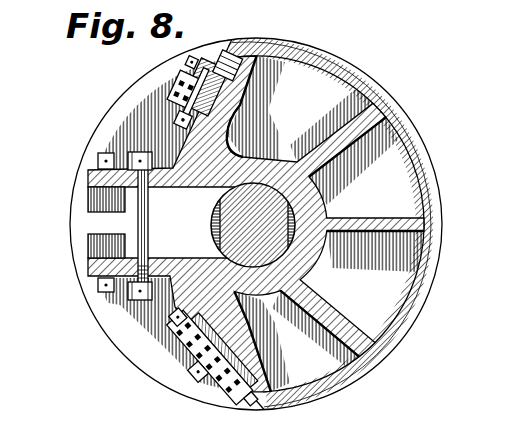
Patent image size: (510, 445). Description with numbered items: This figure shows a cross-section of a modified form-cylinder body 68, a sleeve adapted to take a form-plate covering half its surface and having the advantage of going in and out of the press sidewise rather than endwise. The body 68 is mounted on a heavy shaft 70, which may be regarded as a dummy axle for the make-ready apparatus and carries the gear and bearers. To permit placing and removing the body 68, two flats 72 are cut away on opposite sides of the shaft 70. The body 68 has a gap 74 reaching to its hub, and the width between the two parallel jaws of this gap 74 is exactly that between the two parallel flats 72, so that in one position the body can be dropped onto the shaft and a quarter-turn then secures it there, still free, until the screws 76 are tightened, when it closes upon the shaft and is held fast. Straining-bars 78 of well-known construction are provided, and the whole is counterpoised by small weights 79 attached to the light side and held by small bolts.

The body 68 is at (256, 224).
The shaft 70 is at (292, 252).
The flats 72 is at (221, 233).
The gap 74 is at (170, 222).
The screws 76 is at (137, 219).
The straining-bars 78 is at (180, 102).
The weights 79 is at (88, 196).